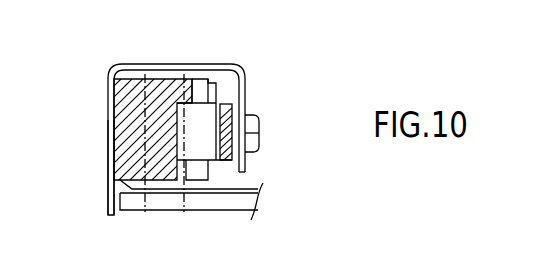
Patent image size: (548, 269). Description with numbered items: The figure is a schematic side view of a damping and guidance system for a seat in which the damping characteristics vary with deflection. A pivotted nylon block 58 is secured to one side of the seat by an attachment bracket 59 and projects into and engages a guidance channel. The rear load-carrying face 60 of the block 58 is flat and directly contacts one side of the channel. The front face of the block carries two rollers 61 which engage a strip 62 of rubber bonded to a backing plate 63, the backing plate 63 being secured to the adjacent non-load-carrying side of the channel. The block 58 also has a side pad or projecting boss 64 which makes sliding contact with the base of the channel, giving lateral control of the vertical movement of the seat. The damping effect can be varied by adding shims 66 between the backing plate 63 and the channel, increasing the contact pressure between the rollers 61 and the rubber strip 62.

The pivotted nylon block 58 is at (113, 163).
The attachment bracket 59 is at (258, 199).
The rear load-carrying face 60 is at (107, 110).
The roller 61 is at (202, 112).
The strip of rubber 62 is at (233, 106).
The backing plate 63 is at (230, 133).
The side pad or projecting boss 64 is at (153, 77).
The shim 66 is at (241, 163).